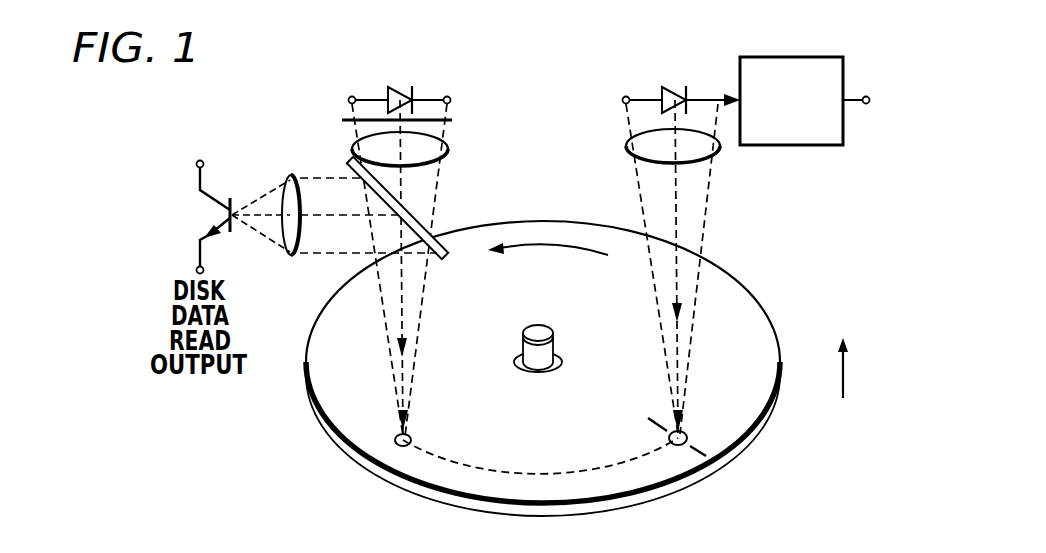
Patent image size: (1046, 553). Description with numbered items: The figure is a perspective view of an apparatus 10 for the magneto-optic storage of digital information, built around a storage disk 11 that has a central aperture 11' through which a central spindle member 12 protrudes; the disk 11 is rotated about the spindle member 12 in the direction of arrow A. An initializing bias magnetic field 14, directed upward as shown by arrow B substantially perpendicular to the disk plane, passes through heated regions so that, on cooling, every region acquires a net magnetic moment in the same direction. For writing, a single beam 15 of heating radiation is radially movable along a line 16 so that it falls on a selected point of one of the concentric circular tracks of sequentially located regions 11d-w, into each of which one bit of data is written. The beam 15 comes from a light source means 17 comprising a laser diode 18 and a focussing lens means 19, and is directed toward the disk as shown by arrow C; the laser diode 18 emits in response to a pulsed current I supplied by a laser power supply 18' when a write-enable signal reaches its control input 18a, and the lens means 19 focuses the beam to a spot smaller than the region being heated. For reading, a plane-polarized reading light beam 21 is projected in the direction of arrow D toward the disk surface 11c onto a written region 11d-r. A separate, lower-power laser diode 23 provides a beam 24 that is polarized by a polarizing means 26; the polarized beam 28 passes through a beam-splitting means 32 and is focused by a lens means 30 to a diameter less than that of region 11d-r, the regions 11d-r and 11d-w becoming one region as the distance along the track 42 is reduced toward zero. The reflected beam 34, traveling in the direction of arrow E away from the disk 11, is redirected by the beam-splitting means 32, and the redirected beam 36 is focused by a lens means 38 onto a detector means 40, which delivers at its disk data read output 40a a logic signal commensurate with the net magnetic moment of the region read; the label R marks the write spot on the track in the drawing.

The apparatus 10 is at (549, 172).
The storage disk 11 is at (559, 365).
The central aperture 11' is at (571, 382).
The disk surface 11c is at (503, 441).
The written region 11d-r is at (396, 438).
The storage regions 11d-w is at (690, 438).
The central spindle member 12 is at (555, 346).
The initializing bias magnetic field 14 is at (838, 340).
The beam of heating radiation 15 is at (722, 192).
The line 16 is at (668, 440).
The light source means 17 is at (608, 160).
The laser diode 18 is at (682, 57).
The control input 18a is at (868, 93).
The laser power supply 18' is at (806, 134).
The focussing lens means 19 is at (630, 140).
The reading light beam 21 is at (426, 348).
The laser diode 23 is at (397, 87).
The beam of light 24 is at (452, 102).
The polarizing means 26 is at (351, 115).
The polarized beam 28 is at (350, 122).
The lens means 30 is at (450, 148).
The beam-splitting means 32 is at (430, 228).
The reflected beam 34 is at (381, 302).
The redirected beam 36 is at (301, 258).
The lens means 38 is at (285, 188).
The detector means 40 is at (229, 200).
The disk data read output 40a is at (196, 270).
The track 42 is at (542, 477).
The arrow A is at (560, 256).
The arrow B is at (835, 369).
The arrow C is at (677, 285).
The arrow D is at (404, 283).
The arrow E is at (410, 422).
The current I is at (735, 92).
The write spot radius R is at (683, 445).